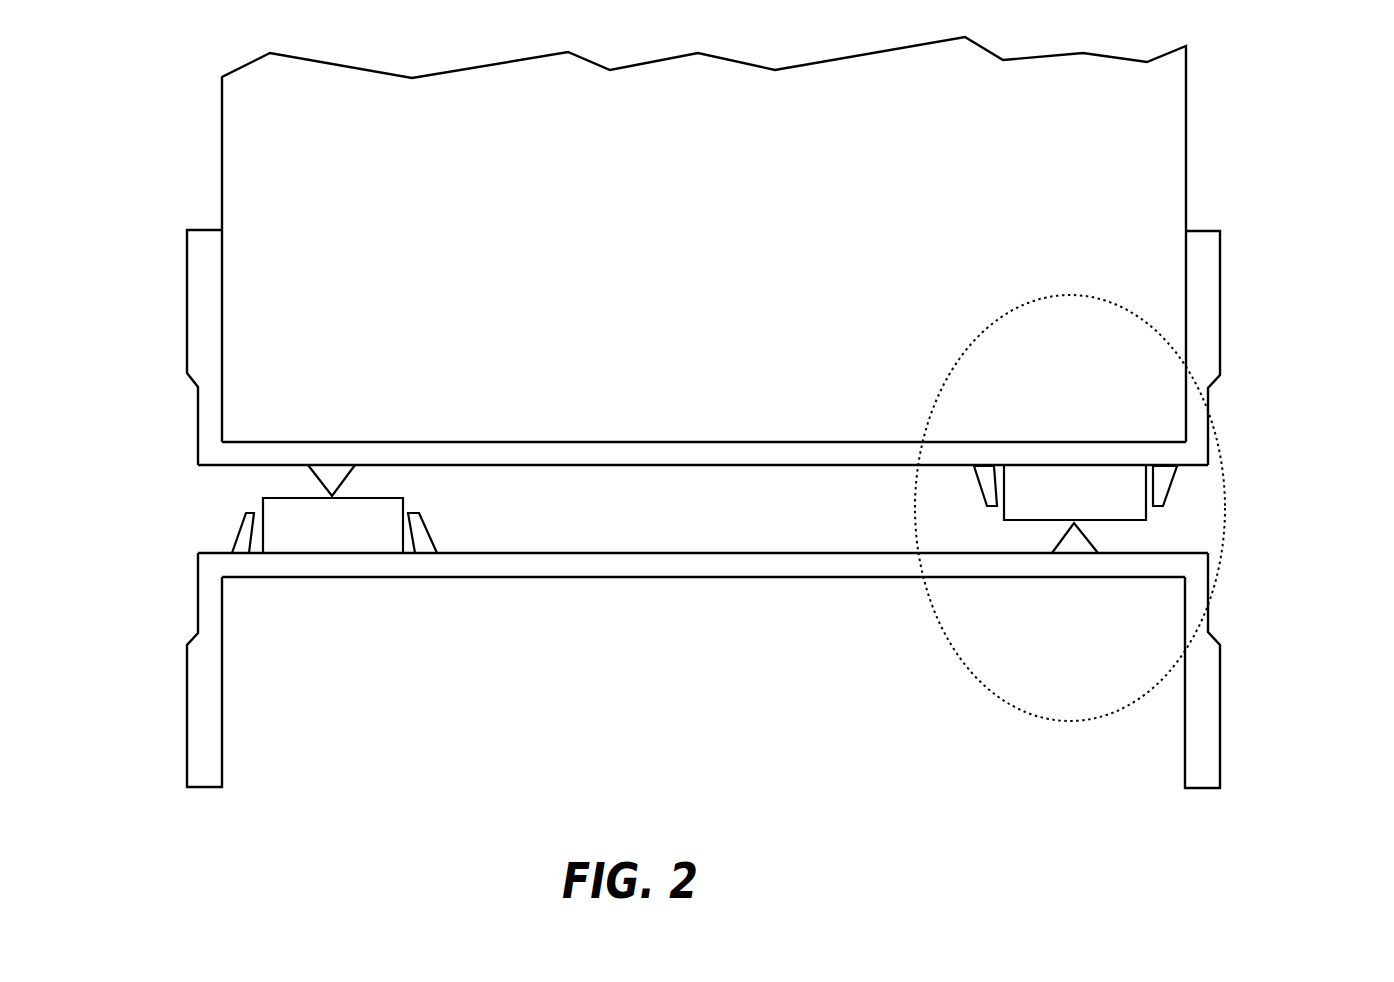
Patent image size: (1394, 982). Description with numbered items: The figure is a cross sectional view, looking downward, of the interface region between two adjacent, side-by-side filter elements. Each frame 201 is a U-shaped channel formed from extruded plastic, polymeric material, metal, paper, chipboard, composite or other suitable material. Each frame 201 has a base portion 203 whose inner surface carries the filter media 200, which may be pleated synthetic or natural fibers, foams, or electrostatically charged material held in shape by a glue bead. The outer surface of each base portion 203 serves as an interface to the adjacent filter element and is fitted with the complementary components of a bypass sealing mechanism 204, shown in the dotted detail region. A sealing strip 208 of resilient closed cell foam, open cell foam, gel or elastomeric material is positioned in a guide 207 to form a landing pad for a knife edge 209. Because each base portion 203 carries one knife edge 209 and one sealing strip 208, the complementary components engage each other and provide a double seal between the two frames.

The filter media 200 is at (727, 262).
The frame 201 is at (1217, 323).
The base portion 203 is at (765, 446).
The bypass sealing mechanism 204 is at (1222, 480).
The guide 207 is at (237, 532).
The sealing strip 208 is at (345, 543).
The knife edge 209 is at (332, 478).